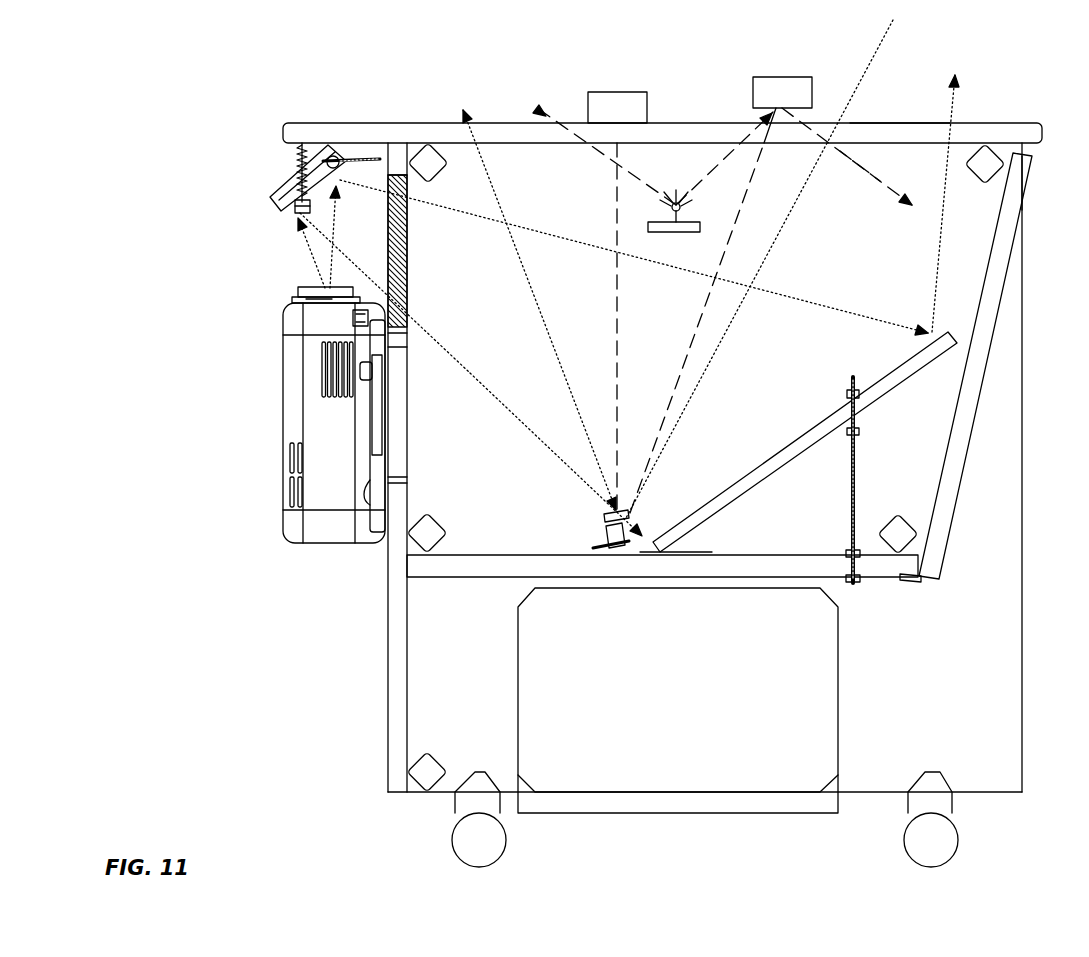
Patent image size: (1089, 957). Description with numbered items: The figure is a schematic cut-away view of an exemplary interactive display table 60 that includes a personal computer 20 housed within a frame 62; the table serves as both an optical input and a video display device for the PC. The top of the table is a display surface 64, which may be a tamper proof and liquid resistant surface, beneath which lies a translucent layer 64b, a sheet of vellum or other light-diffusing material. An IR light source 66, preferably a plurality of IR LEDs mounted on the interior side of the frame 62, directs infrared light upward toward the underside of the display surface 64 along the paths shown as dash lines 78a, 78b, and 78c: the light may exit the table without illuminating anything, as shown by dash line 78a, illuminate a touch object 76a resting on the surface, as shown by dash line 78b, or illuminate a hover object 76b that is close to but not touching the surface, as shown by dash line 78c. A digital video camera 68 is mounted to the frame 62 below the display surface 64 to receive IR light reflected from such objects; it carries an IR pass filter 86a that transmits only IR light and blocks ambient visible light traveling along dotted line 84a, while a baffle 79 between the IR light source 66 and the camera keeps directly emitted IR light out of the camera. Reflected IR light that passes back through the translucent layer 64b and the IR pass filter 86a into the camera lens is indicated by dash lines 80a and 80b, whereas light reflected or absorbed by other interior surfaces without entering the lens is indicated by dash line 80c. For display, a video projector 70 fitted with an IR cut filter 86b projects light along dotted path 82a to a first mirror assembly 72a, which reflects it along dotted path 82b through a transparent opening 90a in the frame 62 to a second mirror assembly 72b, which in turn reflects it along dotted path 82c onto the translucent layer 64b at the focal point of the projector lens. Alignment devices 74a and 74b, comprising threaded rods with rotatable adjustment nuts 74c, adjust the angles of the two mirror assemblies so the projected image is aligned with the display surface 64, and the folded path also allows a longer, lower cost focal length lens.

The personal computer 20 is at (838, 692).
The interactive display table 60 is at (282, 612).
The frame 62 is at (386, 686).
The display surface 64 is at (420, 123).
The translucent layer 64b is at (878, 123).
The IR light source 66 is at (666, 208).
The digital video camera 68 is at (606, 522).
The video projector 70 is at (287, 390).
The first mirror assembly 72a is at (290, 208).
The second mirror assembly 72b is at (770, 448).
The alignment device 74a is at (300, 185).
The alignment device 74b is at (858, 456).
The rotatable adjustment nut 74c is at (296, 205).
The touch object 76a is at (602, 92).
The hover object 76b is at (765, 77).
The dash line 78a is at (596, 150).
The dash line 78b is at (652, 162).
The dash line 78c is at (722, 120).
The baffle 79 is at (672, 233).
The dash line 80a is at (616, 298).
The dash line 80b is at (694, 330).
The dash line 80c is at (872, 168).
The dotted path 82a is at (333, 235).
The dotted path 82b is at (560, 422).
The dotted path 82c is at (518, 262).
The dotted line 84a is at (878, 35).
The IR pass filter 86a is at (608, 515).
The IR cut filter 86b is at (298, 292).
The transparent opening 90a is at (408, 300).